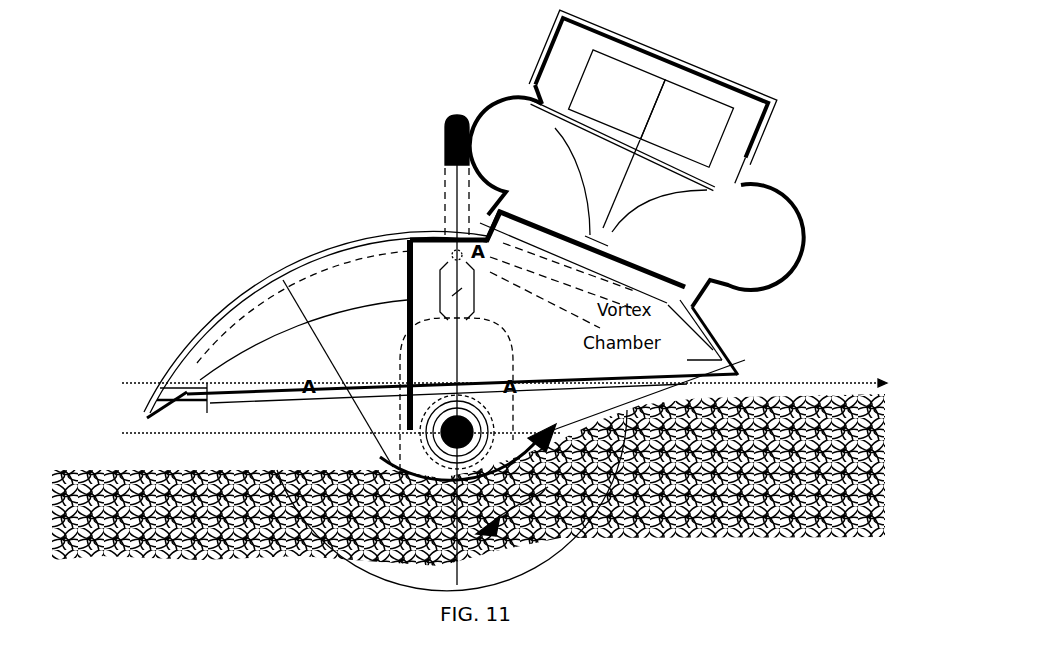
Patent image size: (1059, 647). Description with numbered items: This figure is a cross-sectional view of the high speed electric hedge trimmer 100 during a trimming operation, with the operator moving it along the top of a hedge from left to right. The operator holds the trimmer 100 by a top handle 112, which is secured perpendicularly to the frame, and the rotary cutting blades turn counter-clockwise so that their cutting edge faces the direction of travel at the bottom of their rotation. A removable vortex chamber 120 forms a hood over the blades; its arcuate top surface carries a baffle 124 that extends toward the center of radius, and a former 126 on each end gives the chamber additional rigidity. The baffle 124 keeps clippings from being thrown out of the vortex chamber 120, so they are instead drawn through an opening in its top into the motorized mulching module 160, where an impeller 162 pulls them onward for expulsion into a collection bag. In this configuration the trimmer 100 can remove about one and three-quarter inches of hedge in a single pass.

The hedge trimmer 100 is at (207, 175).
The top handle 112 is at (450, 115).
The vortex chamber 120 is at (740, 350).
The baffle 124 is at (407, 313).
The former 126 is at (255, 298).
The motorized mulching module 160 is at (707, 80).
The impeller 162 is at (670, 195).